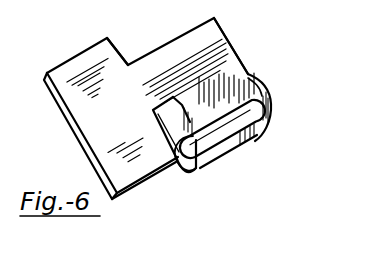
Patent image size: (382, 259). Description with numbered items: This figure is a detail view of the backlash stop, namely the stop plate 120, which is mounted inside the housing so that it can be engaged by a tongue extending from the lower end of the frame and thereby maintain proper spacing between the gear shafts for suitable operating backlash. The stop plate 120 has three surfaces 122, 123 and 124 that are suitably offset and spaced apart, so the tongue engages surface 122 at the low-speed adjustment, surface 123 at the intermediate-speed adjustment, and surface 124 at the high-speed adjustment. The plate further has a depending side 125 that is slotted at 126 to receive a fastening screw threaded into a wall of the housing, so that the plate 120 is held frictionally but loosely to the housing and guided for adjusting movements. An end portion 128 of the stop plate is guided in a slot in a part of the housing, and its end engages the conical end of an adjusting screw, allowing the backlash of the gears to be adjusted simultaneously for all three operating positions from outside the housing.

The stop plate 120 is at (125, 162).
The surface 122 is at (115, 44).
The surface 123 is at (231, 43).
The surface 124 is at (194, 172).
The depending side 125 is at (271, 98).
The slot 126 is at (262, 133).
The end portion 128 is at (82, 144).